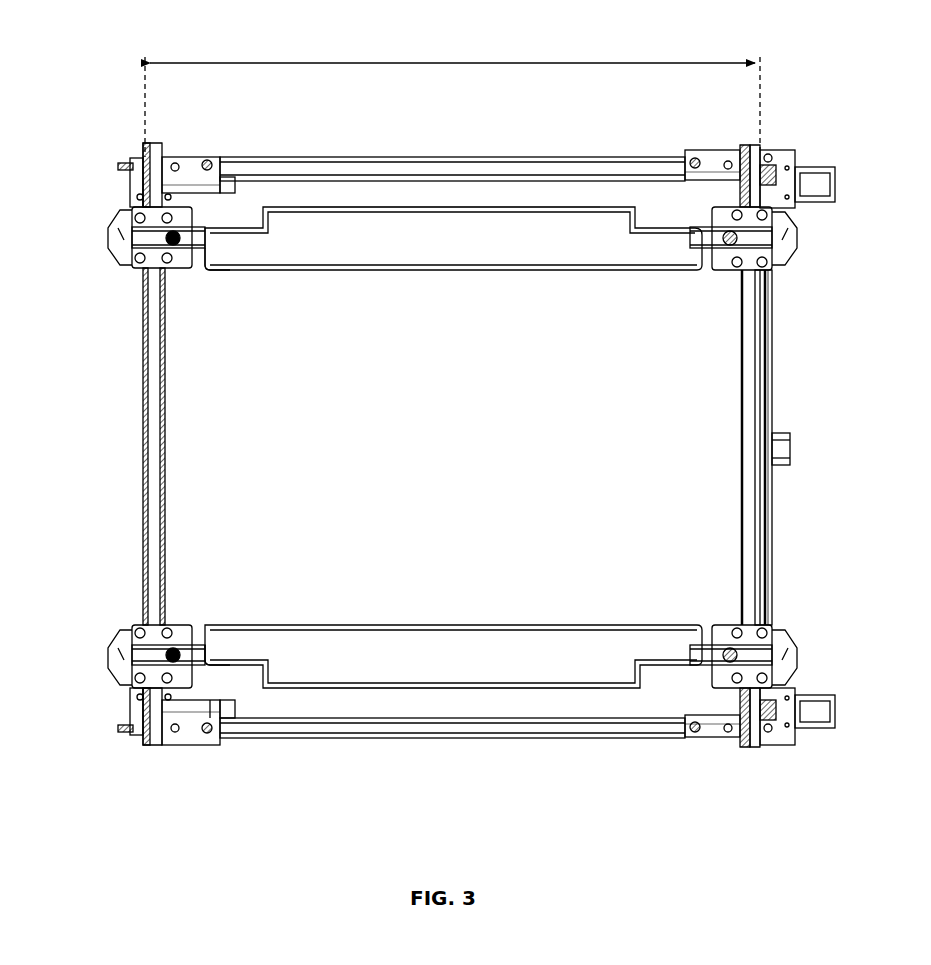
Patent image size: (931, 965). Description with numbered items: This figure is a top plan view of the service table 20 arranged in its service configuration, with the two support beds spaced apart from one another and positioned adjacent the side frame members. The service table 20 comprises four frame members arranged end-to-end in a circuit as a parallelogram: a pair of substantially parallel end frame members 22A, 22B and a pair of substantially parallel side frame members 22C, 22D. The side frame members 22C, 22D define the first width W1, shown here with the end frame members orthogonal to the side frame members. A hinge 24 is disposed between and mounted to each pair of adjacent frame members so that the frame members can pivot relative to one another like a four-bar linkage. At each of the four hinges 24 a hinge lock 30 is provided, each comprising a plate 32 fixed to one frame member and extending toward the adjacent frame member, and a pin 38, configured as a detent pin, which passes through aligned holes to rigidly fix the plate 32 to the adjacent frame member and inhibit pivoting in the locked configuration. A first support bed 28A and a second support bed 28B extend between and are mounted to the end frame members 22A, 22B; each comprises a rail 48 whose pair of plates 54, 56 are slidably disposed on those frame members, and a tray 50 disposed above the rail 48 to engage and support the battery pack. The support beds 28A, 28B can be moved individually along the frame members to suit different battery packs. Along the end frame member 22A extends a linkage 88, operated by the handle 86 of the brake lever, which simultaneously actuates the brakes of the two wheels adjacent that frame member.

The service table 20 is at (86, 826).
The end frame member 22A is at (750, 553).
The end frame member 22B is at (156, 415).
The side frame member 22C is at (466, 736).
The side frame member 22D is at (466, 160).
The hinge 24 is at (123, 121).
The first support bed 28A is at (322, 620).
The second support bed 28B is at (598, 283).
The hinge lock 30 is at (176, 150).
The plate 32 is at (195, 180).
The pin 38 is at (206, 162).
The rail 48 is at (198, 250).
The tray 50 is at (445, 240).
The plate 54 is at (785, 240).
The plate 56 is at (122, 240).
The handle 86 is at (772, 448).
The linkage 88 is at (765, 360).
The first width W1 is at (452, 86).